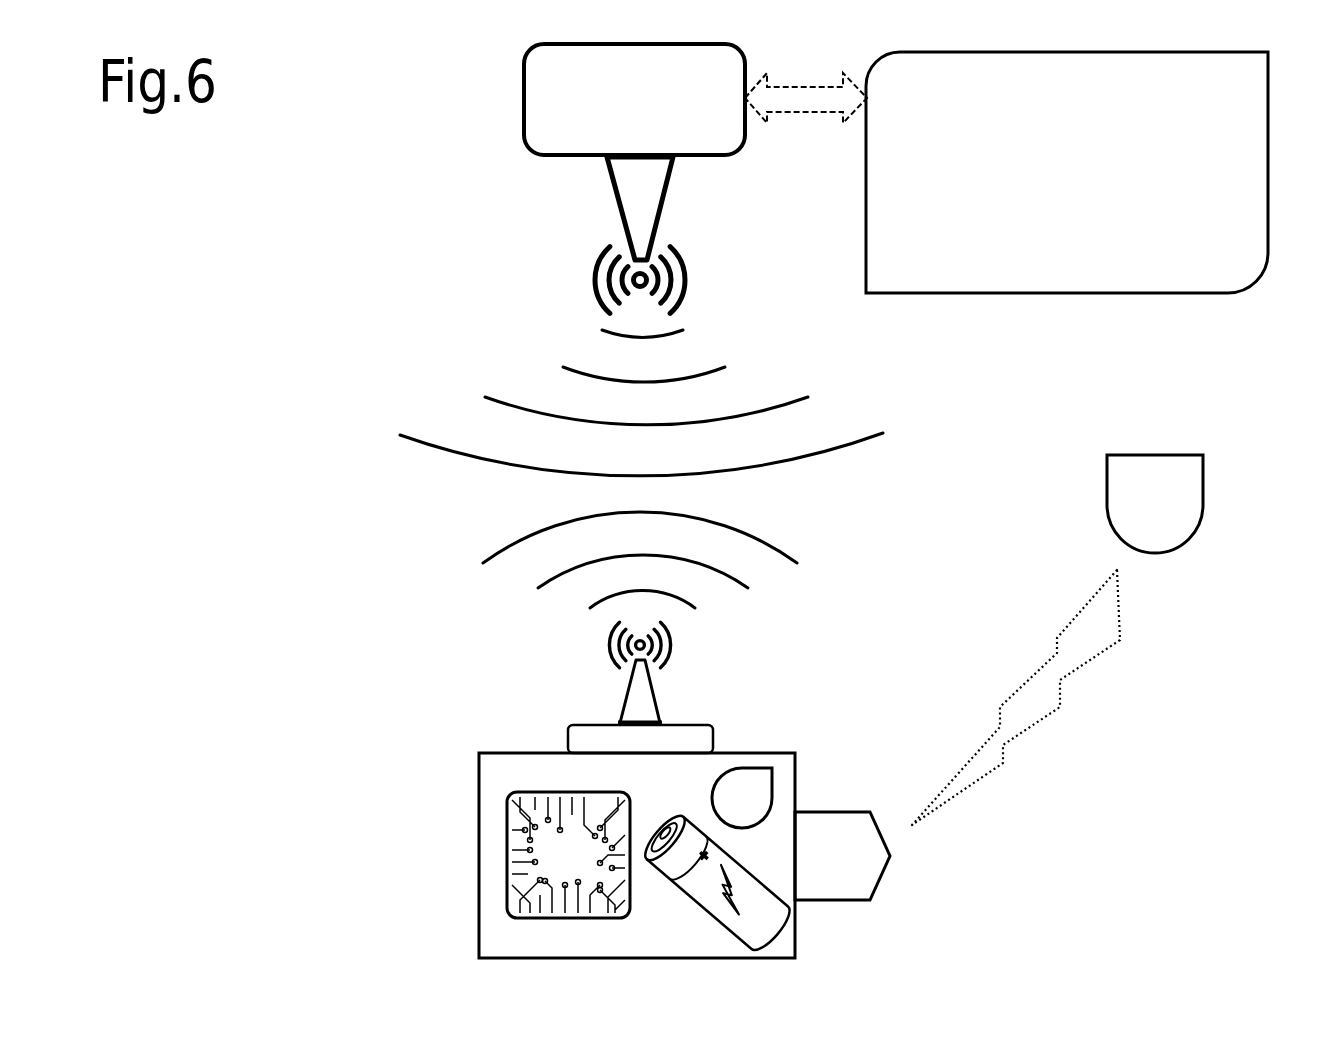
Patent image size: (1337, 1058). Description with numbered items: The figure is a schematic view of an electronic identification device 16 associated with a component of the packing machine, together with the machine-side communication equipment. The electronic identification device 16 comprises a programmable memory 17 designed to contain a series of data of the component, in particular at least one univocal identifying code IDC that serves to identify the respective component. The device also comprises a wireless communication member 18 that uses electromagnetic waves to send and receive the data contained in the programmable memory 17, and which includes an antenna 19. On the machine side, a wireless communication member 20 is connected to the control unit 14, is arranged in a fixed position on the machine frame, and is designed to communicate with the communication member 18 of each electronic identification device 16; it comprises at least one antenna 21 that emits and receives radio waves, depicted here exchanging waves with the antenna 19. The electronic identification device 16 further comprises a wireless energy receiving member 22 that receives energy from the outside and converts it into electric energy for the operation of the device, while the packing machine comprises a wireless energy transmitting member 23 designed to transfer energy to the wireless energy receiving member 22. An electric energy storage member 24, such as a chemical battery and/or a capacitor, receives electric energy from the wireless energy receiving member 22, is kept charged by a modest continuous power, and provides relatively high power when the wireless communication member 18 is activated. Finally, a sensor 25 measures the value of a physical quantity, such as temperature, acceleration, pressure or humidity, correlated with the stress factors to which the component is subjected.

The control unit 14 is at (1197, 168).
The electronic identification device 16 is at (571, 790).
The programmable memory 17 is at (543, 893).
The wireless communication member 18 is at (532, 721).
The antenna 19 is at (642, 695).
The wireless communication member 20 is at (550, 178).
The antenna 21 is at (640, 205).
The wireless energy receiving member 22 is at (837, 855).
The wireless energy transmitting member 23 is at (1152, 491).
The electric energy storage member 24 is at (757, 923).
The sensor 25 is at (735, 790).